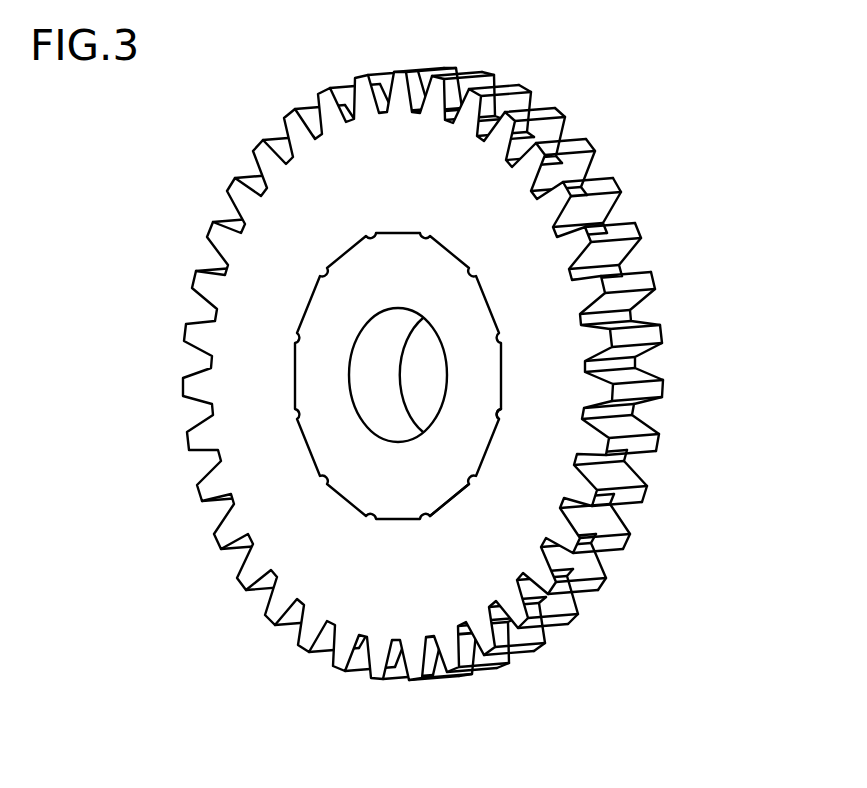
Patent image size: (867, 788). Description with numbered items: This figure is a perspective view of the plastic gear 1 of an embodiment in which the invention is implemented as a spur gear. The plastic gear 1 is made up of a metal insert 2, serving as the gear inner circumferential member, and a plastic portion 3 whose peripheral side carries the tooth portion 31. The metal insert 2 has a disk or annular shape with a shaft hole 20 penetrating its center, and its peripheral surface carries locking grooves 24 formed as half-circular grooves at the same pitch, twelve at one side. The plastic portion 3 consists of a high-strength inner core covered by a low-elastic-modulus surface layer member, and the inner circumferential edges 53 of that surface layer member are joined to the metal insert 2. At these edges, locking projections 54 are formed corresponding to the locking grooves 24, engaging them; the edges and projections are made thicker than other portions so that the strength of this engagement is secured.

The plastic gear 1 is at (436, 374).
The metal insert 2 is at (359, 364).
The plastic portion 3 is at (237, 367).
The shaft hole 20 is at (447, 383).
The locking grooves 24 is at (492, 408).
The tooth portion 31 is at (627, 220).
The inner circumferential edges 53 is at (453, 497).
The locking projections 54 is at (489, 423).